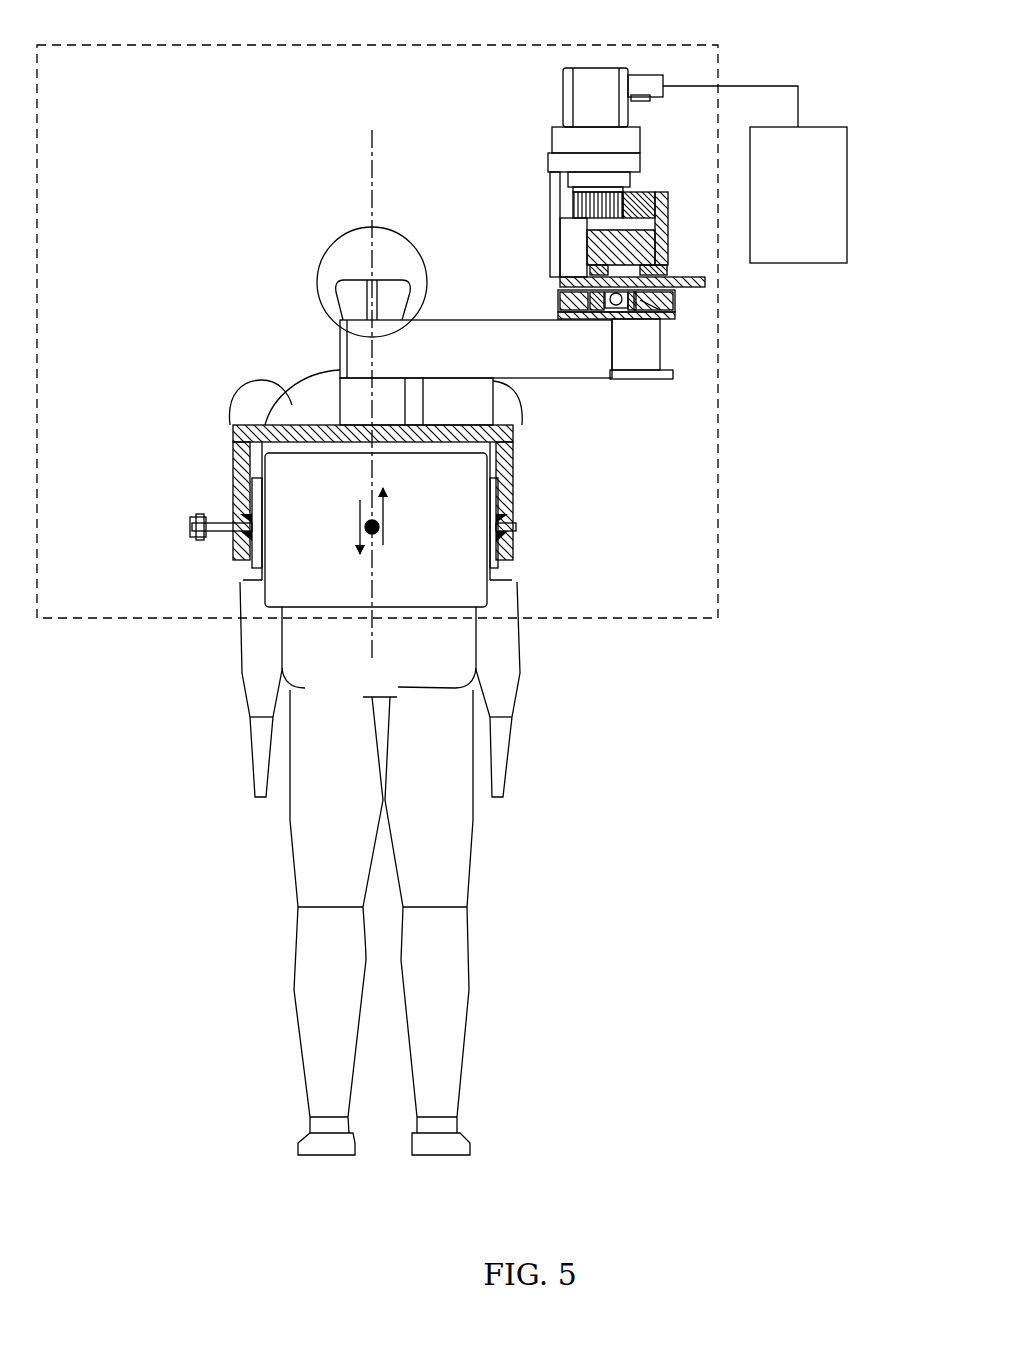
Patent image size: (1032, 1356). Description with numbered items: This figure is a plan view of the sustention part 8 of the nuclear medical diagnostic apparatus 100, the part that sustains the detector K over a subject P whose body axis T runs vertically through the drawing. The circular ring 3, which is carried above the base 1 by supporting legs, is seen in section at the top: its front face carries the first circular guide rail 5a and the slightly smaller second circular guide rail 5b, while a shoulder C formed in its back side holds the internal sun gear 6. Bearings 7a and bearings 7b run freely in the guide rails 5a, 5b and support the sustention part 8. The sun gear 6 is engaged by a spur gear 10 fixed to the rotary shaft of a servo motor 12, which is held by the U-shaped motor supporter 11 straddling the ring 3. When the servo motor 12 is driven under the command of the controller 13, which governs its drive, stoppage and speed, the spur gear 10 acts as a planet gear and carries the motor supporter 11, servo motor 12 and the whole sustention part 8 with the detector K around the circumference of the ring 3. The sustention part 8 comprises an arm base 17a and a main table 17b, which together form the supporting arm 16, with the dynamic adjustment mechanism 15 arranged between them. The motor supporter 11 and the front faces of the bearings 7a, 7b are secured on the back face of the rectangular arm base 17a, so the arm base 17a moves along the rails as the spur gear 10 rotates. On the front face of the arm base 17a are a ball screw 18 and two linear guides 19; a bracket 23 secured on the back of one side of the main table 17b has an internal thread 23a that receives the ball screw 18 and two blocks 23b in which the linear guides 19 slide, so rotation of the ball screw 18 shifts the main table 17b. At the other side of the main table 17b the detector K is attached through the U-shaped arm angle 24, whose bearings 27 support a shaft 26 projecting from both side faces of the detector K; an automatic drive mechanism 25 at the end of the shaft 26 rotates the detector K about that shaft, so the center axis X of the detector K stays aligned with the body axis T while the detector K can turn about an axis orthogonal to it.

The base 1 is at (563, 45).
The circular ring 3 is at (670, 218).
The first circular guide rail 5a is at (655, 258).
The second circular guide rail 5b is at (594, 238).
The sun gear 6 is at (636, 191).
The bearings 7a is at (667, 268).
The bearings 7b is at (590, 268).
The sustention part 8 is at (678, 396).
The spur gear 10 is at (580, 206).
The motor supporter 11 is at (552, 167).
The servo motor 12 is at (563, 80).
The controller 13 is at (848, 148).
The dynamic adjustment mechanism 15 is at (688, 324).
The supporting arm 16 is at (610, 392).
The arm base 17a is at (705, 281).
The main table 17b is at (557, 373).
The ball screw 18 is at (625, 319).
The linear guides 19 is at (566, 292).
The bracket 23 is at (586, 319).
The internal thread 23a is at (643, 319).
The blocks 23b is at (558, 305).
The arm angle 24 is at (308, 423).
The automatic drive mechanism 25 is at (203, 505).
The shaft 26 is at (190, 527).
The bearings 27 is at (240, 538).
The nuclear medical diagnostic apparatus 100 is at (818, 468).
The subject P is at (242, 651).
The detector K is at (394, 590).
The body axis T is at (378, 170).
The center axis of detector X is at (378, 532).
The shoulder C is at (668, 196).